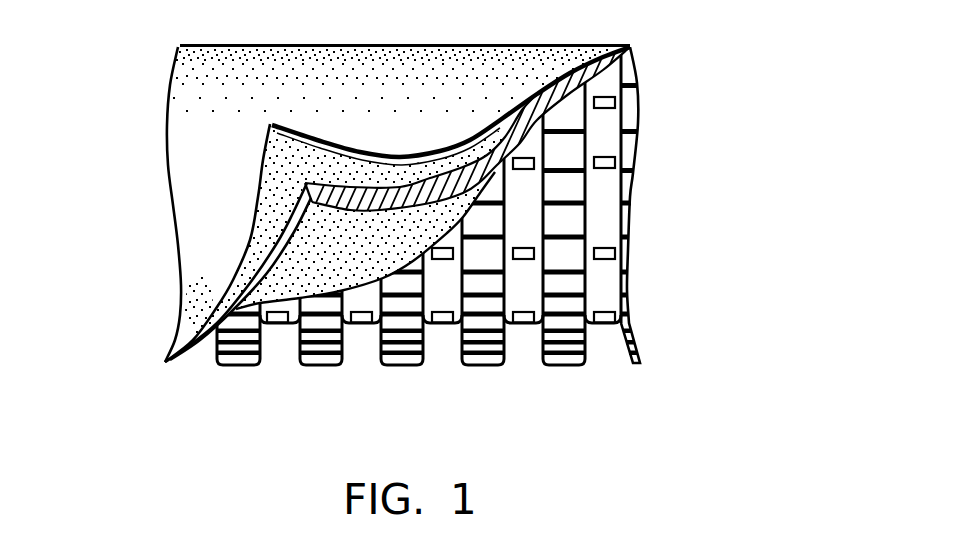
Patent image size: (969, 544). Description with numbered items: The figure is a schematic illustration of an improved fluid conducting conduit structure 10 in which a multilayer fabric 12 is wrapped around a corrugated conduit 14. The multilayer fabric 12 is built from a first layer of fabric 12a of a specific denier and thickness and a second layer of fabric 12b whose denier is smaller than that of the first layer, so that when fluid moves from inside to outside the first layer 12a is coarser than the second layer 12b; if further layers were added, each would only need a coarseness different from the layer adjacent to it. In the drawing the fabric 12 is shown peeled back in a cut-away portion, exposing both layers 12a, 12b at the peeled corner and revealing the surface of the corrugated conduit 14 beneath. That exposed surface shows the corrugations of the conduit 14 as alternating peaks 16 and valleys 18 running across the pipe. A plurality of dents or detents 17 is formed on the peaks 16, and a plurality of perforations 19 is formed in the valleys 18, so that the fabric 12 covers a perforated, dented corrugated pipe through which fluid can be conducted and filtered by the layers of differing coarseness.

The fluid conducting conduit structure 10 is at (697, 58).
The multilayer fabric 12 is at (157, 333).
The first layer of fabric 12a is at (297, 203).
The second layer of fabric 12b is at (268, 136).
The corrugated conduit 14 is at (602, 352).
The peaks 16 is at (323, 366).
The dents or detents 17 is at (555, 172).
The valleys 18 is at (443, 293).
The perforations 19 is at (528, 248).